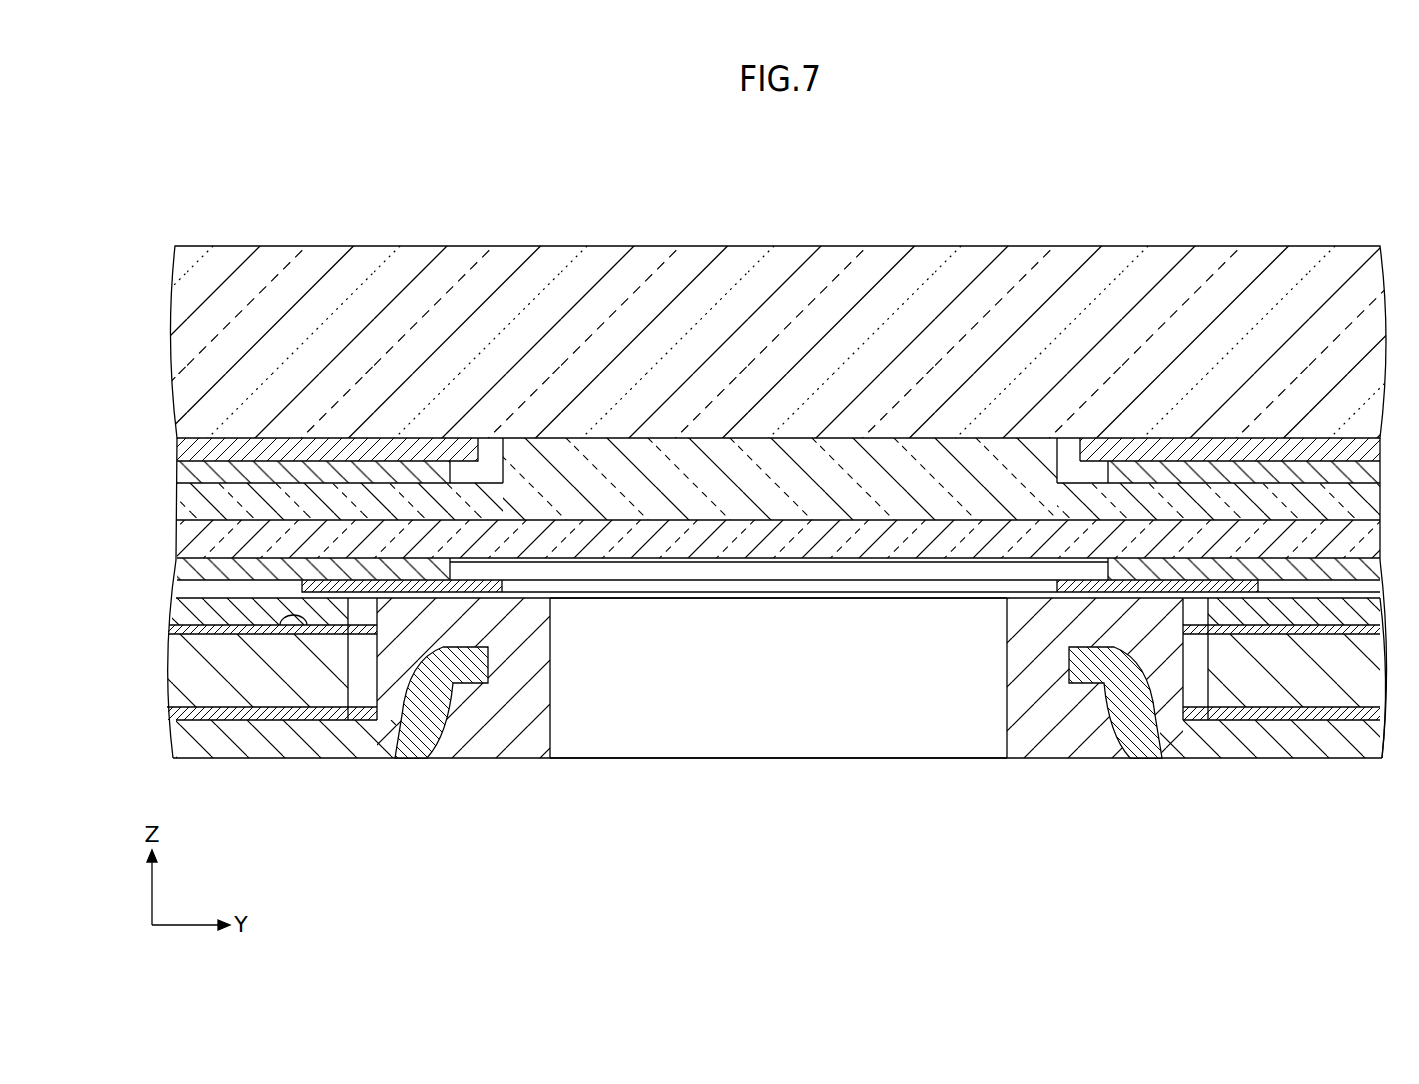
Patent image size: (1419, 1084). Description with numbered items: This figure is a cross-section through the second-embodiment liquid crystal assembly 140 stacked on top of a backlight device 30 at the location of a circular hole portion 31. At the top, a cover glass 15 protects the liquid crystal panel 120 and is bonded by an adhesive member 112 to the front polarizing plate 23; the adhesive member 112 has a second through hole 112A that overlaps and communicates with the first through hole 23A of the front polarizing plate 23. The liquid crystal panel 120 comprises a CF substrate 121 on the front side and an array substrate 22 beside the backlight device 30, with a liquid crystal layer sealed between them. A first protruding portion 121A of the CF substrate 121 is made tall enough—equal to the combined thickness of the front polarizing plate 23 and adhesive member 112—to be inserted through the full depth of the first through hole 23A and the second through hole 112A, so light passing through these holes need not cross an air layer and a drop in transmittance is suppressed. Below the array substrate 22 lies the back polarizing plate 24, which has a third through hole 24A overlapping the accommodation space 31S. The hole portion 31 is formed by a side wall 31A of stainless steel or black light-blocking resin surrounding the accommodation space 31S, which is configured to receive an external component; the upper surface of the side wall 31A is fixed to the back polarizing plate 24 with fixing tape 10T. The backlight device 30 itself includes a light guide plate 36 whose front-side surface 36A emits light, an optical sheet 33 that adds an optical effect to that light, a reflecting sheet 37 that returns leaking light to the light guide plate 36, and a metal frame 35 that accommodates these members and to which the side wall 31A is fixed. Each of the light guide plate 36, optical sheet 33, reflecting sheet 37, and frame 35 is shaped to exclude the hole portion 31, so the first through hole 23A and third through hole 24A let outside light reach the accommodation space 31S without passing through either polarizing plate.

The liquid crystal assembly 140 is at (1335, 142).
The cover glass 15 is at (1050, 270).
The adhesive member 112 is at (1116, 455).
The second through hole 112A is at (486, 446).
The front polarizing plate 23 is at (1163, 477).
The first through hole 23A is at (467, 458).
The liquid crystal panel 120 is at (1190, 182).
The CF substrate 121 is at (1218, 507).
The first protruding portion 121A is at (753, 480).
The array substrate 22 is at (1278, 543).
The back polarizing plate 24 is at (1330, 570).
The third through hole 24A is at (452, 567).
The backlight device 30 is at (1372, 820).
The hole portion 31 is at (1108, 745).
The side wall 31A is at (543, 748).
The accommodation space 31S is at (803, 687).
The frame 35 is at (1165, 745).
The reflecting sheet 37 is at (1230, 723).
The light guide plate 36 is at (1283, 693).
The front-side surface 36A is at (313, 635).
The optical sheet 33 is at (1378, 633).
The fixing tape 10T is at (410, 598).